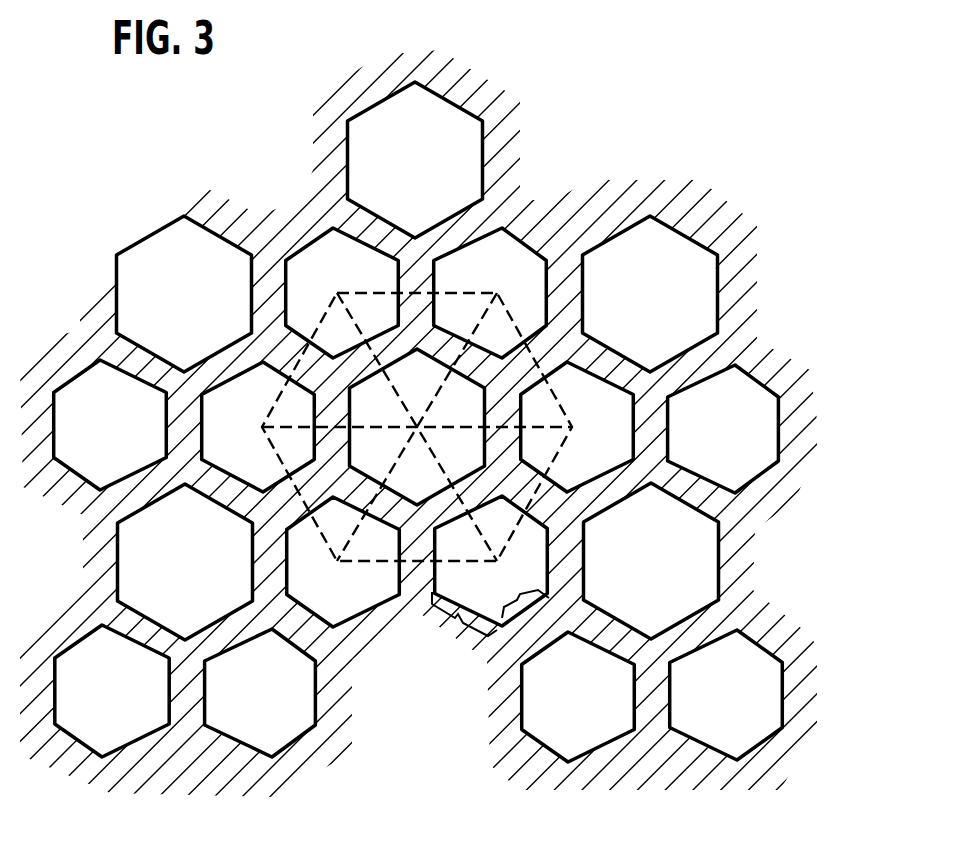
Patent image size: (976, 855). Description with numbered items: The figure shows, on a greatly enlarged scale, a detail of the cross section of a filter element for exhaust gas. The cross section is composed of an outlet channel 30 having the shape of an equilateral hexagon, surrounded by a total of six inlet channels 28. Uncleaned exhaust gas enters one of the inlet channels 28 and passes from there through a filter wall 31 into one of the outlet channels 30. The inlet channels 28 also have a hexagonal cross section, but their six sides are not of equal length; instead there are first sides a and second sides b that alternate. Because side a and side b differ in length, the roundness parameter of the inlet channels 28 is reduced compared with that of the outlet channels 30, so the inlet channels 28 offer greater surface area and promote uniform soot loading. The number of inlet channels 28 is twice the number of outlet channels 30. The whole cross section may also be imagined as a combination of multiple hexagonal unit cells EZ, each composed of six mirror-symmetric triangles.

The inlet channel 28 is at (500, 254).
The outlet channel 30 is at (675, 253).
The filter wall 31 is at (563, 285).
The hexagonal unit cell EZ is at (302, 503).
The first side a is at (525, 590).
The second side b is at (464, 622).